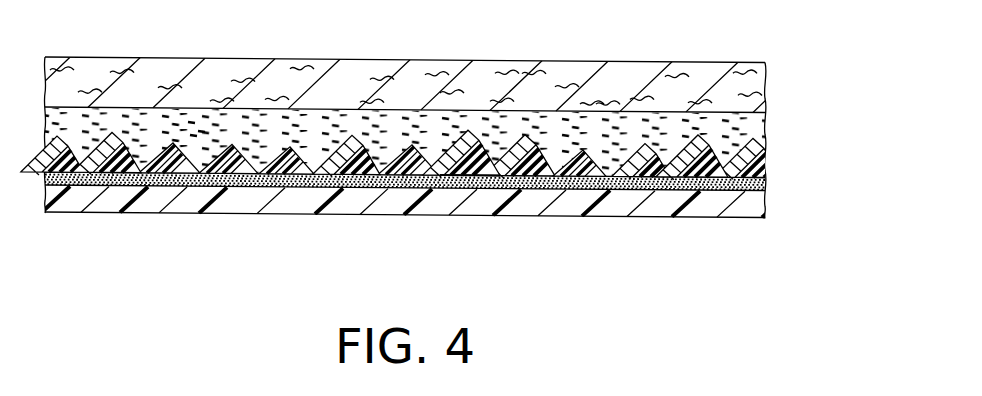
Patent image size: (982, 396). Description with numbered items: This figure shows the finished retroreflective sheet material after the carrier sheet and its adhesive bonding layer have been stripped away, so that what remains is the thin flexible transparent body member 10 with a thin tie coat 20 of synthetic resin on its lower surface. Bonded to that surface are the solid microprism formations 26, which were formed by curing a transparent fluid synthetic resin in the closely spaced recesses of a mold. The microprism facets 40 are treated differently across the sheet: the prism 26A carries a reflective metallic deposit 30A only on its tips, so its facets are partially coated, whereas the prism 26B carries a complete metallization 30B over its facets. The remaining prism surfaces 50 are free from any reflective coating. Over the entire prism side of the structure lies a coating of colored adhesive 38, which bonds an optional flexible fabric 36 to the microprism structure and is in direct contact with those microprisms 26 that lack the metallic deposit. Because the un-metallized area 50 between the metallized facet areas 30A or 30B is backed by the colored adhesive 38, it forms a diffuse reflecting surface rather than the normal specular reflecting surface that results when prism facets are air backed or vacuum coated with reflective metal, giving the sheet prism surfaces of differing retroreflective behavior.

The body member 10 is at (767, 207).
The tie coat 20 is at (767, 188).
The microprism formations 26 is at (767, 162).
The prism 26A is at (112, 163).
The prism 26B is at (470, 170).
The reflective metallic deposit 30A is at (68, 145).
The reflective metallic deposit 30B is at (482, 134).
The flexible fabric 36 is at (767, 84).
The coating of colored adhesive 38 is at (767, 128).
The microprism facets 40 is at (558, 145).
The un-metallized area 50 is at (194, 128).